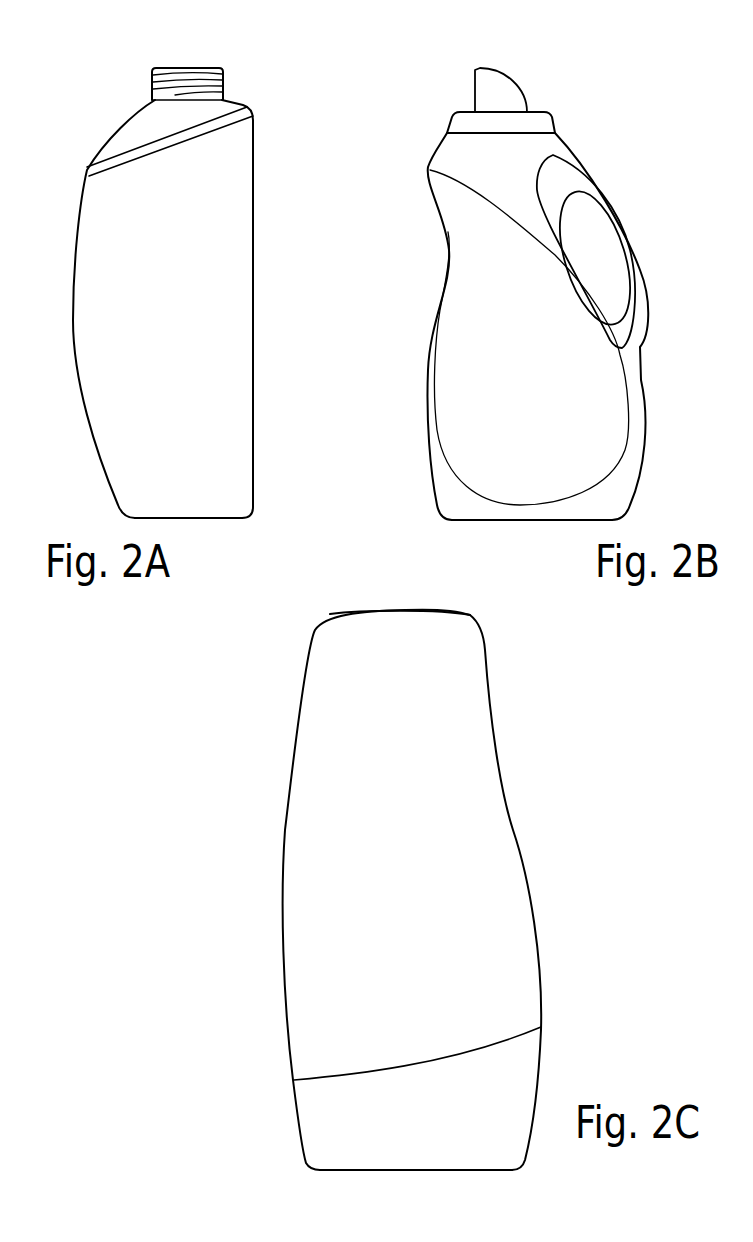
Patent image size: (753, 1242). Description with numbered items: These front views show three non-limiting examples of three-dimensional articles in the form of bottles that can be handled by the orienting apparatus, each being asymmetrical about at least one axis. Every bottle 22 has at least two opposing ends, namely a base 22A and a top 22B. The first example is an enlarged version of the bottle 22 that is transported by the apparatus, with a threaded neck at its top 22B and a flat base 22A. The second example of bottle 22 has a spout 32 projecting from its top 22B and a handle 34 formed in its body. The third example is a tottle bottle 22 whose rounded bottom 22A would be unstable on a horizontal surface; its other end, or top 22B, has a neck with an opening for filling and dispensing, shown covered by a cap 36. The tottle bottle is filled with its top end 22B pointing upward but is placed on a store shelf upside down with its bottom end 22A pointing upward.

In FIG. 2A, the bottle 22 is at (95, 105).
In FIG. 2B, the bottle 22 is at (645, 110).
In FIG. 2C, the bottle 22 is at (525, 733).
In FIG. 2A, the base 22A is at (215, 520).
In FIG. 2B, the base 22A is at (535, 522).
In FIG. 2C, the base 22A is at (405, 610).
In FIG. 2A, the top 22B is at (195, 67).
In FIG. 2B, the top 22B is at (513, 88).
In FIG. 2C, the top 22B is at (338, 1170).
In FIG. 2B, the spout 32 is at (481, 98).
In FIG. 2B, the handle 34 is at (620, 213).
In FIG. 2C, the cap 36 is at (513, 1092).